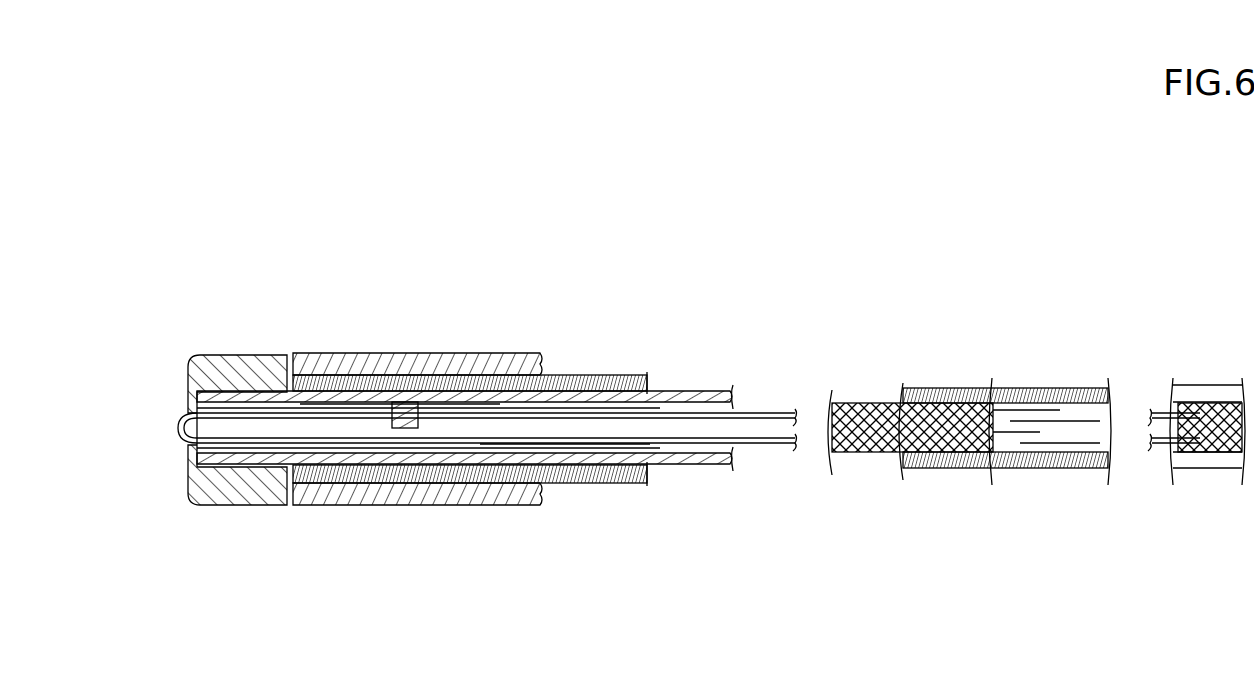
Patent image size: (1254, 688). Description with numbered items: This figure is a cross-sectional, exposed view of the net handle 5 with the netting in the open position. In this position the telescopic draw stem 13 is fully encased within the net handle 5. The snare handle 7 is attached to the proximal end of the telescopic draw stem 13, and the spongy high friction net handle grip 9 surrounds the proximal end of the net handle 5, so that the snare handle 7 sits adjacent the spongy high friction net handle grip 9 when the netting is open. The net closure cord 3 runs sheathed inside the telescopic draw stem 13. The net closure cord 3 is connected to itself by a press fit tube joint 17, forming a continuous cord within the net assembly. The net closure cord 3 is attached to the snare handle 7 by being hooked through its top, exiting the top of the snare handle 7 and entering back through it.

The net closure cord 3 is at (775, 448).
The net handle 5 is at (614, 486).
The snare handle 7 is at (183, 475).
The spongy high friction net handle grip 9 is at (387, 507).
The telescopic draw stem 13 is at (700, 392).
The press fit tube joint 17 is at (458, 398).